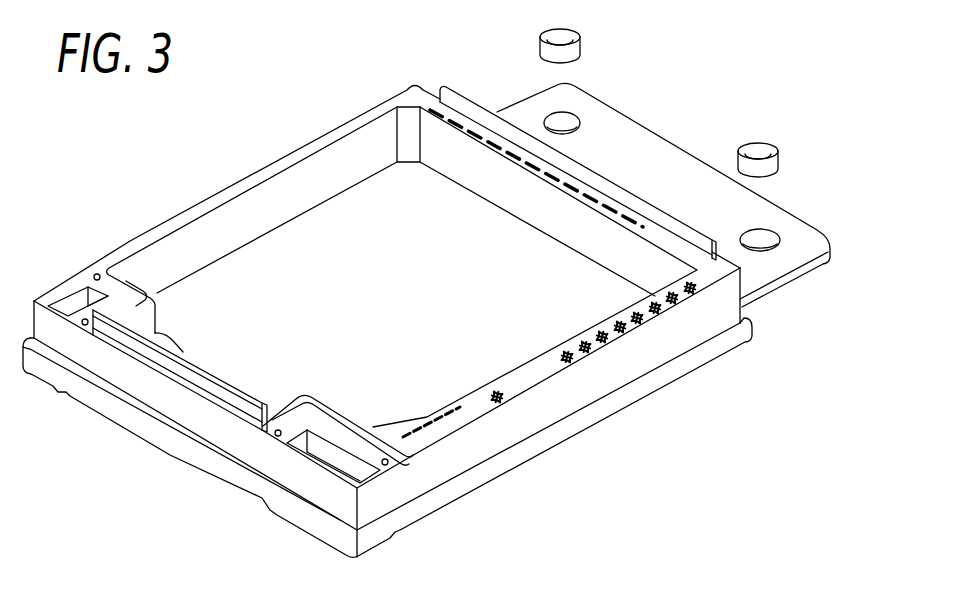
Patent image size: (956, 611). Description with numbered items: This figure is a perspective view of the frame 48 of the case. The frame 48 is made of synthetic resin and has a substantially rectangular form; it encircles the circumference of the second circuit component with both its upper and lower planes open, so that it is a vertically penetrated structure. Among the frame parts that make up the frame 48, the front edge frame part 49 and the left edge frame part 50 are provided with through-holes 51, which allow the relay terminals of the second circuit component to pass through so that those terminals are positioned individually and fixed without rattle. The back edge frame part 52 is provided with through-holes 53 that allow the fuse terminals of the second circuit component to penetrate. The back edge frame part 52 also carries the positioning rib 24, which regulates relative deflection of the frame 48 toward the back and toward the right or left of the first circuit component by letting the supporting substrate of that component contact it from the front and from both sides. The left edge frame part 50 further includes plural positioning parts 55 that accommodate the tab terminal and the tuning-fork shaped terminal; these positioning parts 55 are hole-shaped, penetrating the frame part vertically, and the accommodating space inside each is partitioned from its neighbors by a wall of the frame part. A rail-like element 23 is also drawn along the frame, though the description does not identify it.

The frame 48 is at (326, 86).
The through-holes 53 is at (562, 186).
The back edge frame part 52 is at (590, 225).
The positioning rib 24 is at (656, 206).
The positioning parts 55 is at (693, 297).
The left edge frame part 50 is at (628, 373).
The through-holes 51 is at (465, 402).
The rail 23 is at (149, 336).
The front edge frame part 49 is at (194, 422).